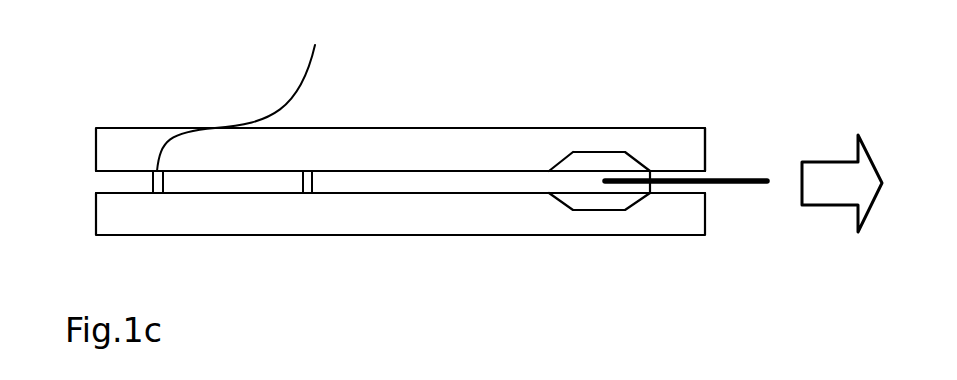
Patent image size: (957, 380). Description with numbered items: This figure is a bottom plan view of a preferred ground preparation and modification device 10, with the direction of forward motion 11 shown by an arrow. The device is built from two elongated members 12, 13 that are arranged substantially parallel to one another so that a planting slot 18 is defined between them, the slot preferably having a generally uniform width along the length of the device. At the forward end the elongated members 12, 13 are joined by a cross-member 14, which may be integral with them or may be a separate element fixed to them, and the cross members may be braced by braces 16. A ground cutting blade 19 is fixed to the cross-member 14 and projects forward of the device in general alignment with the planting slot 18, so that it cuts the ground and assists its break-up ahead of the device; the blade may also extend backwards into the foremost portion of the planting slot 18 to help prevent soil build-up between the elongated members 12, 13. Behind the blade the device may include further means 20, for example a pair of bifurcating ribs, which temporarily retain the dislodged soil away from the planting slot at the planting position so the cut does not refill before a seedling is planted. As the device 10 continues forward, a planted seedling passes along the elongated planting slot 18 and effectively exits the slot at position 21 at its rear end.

The ground preparation and modification device 10 is at (214, 78).
The direction of forward motion 11 is at (842, 183).
The elongated member 12 is at (426, 147).
The elongated member 13 is at (418, 218).
The cross-member 14 is at (673, 138).
The braces 16 is at (312, 171).
The planting slot 18 is at (373, 181).
The ground cutting blade 19 is at (732, 185).
The means to improve soil conditions 20 is at (583, 160).
The exit position 21 is at (105, 182).